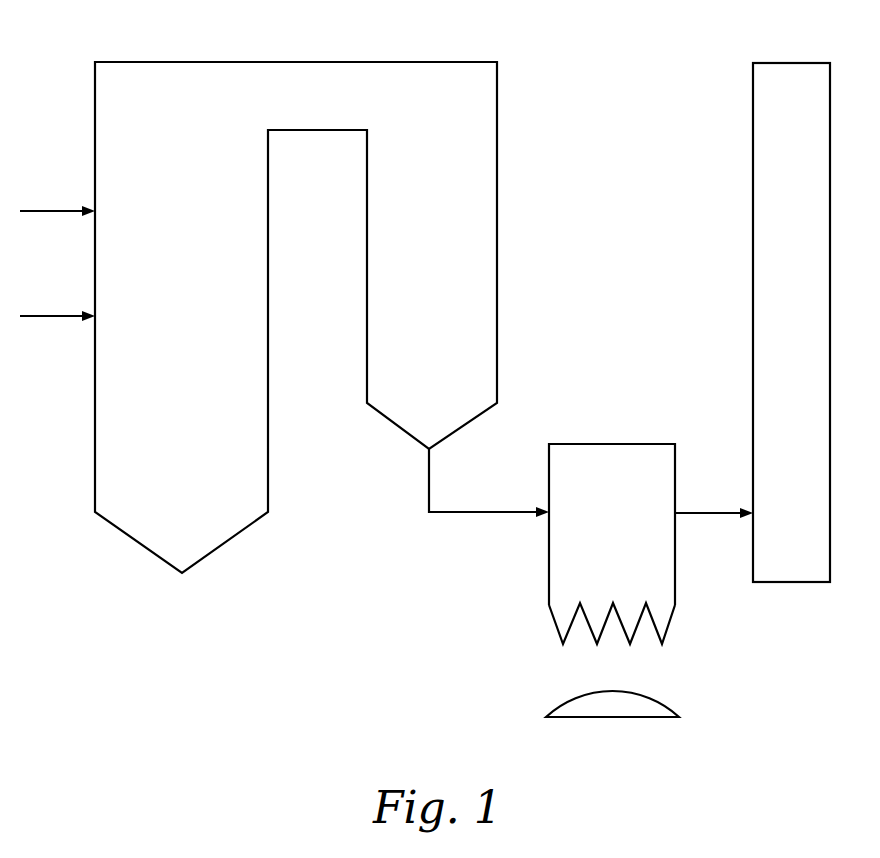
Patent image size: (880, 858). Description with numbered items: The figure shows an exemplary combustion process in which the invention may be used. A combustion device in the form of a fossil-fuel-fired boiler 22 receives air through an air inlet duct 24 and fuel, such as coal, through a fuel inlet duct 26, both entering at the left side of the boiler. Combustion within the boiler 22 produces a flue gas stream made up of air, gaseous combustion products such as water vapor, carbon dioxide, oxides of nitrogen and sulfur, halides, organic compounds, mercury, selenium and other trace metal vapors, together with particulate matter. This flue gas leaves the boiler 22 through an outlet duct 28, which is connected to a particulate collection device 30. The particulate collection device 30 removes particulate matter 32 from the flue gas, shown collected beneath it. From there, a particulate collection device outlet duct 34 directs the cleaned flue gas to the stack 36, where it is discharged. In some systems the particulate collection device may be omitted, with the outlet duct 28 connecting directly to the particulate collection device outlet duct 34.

The fossil-fuel-fired boiler 22 is at (132, 542).
The air inlet duct 24 is at (60, 210).
The fuel inlet duct 26 is at (55, 315).
The outlet duct 28 is at (426, 475).
The particulate collection device 30 is at (606, 444).
The particulate matter 32 is at (650, 692).
The particulate collection device outlet duct 34 is at (698, 513).
The stack 36 is at (788, 63).